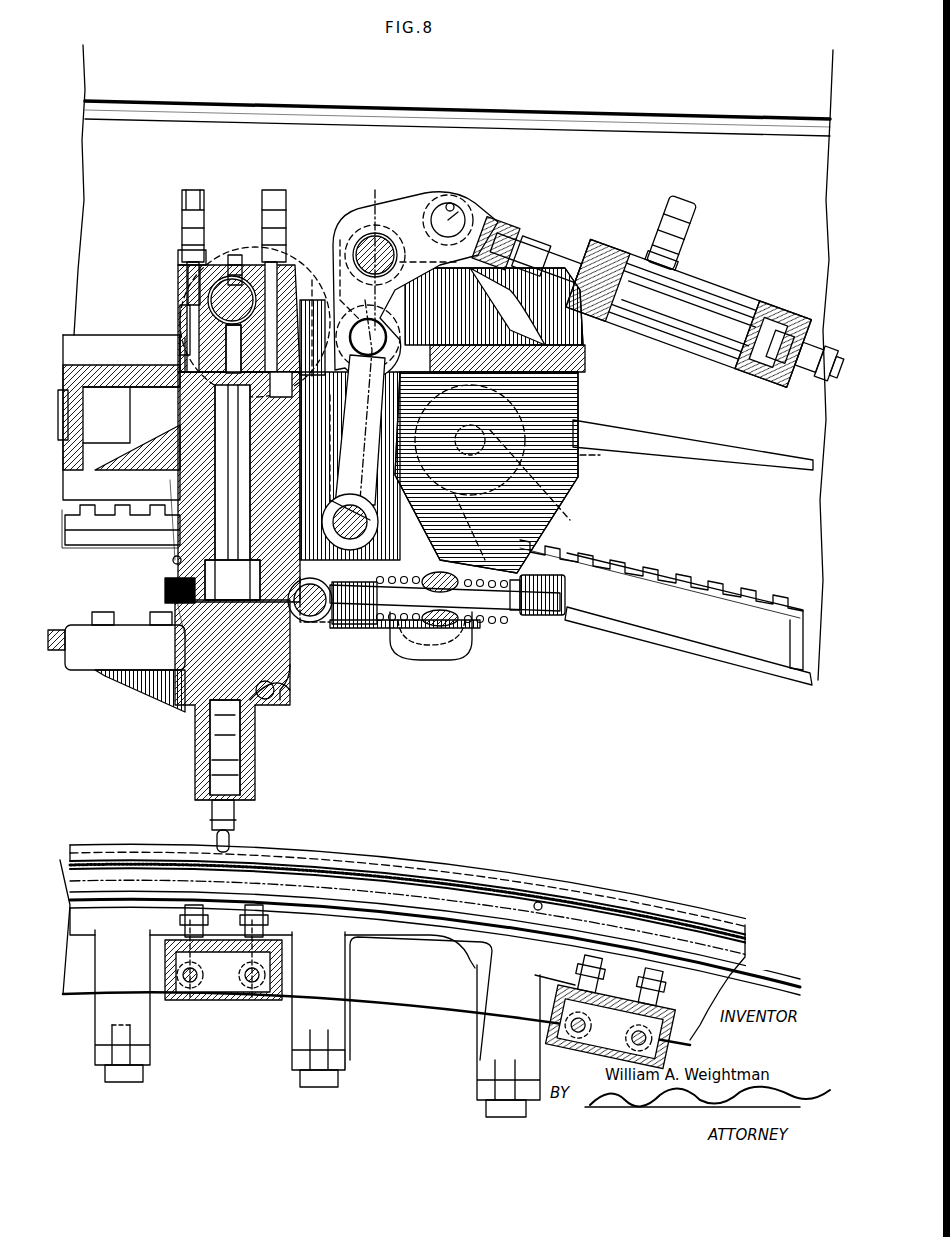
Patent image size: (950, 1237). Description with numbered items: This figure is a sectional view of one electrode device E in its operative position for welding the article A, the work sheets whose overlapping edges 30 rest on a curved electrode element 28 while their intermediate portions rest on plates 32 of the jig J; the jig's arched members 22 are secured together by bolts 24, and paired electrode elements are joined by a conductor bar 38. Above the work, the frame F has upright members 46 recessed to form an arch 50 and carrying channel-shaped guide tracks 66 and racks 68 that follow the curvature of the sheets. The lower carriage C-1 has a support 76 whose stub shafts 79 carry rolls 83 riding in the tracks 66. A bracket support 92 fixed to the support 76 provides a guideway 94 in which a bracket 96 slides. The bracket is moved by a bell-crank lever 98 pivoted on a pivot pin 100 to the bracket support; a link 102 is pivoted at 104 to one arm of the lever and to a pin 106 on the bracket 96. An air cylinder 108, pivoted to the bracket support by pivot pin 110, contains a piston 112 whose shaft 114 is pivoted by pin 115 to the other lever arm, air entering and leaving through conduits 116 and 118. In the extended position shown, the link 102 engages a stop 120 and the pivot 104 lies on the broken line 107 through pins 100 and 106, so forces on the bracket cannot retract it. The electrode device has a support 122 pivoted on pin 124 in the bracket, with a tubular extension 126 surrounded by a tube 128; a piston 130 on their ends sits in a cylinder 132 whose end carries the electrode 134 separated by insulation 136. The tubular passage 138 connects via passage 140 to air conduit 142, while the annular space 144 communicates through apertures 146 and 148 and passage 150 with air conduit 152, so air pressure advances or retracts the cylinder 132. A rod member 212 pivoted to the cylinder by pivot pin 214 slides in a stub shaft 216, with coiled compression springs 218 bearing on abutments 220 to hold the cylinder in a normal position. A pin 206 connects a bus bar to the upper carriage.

The frame F is at (142, 102).
The upright members 46 is at (780, 150).
The tube 128 is at (178, 372).
The aperture 148 is at (190, 372).
The cylinder 132 is at (140, 503).
The aperture 146 is at (170, 538).
The piston 130 is at (172, 560).
The pin 206 is at (62, 628).
The tubular passage 138 is at (176, 600).
The tubular extension 126 is at (165, 590).
The bracket 96 is at (283, 300).
The guideways 94 is at (316, 300).
The stop 120 is at (328, 372).
The air conduit 152 is at (182, 202).
The air conduit 142 is at (284, 200).
The passage 140 is at (250, 262).
The support 122 is at (178, 257).
The pin 124 is at (188, 282).
The passage 150 is at (182, 318).
The annular space 144 is at (239, 487).
The insulation 136 is at (256, 711).
The electrode device E is at (257, 782).
The electrode 134 is at (236, 835).
The bell-crank lever 98 is at (365, 222).
The pivot pin 100 is at (390, 245).
The broken line 107 is at (380, 200).
The pin 115 is at (453, 215).
The pivot 104 is at (372, 330).
The link 102 is at (357, 412).
The pin 106 is at (352, 505).
The bracket support 92 is at (570, 350).
The support 76 is at (578, 490).
The stub shafts 79 is at (571, 441).
The lower carriage C-1 is at (606, 453).
The rolls 83 is at (545, 515).
The air cylinder 108 is at (655, 268).
The shaft 114 is at (672, 280).
The piston 112 is at (730, 305).
The air conduit 118 is at (820, 385).
The air conduit 116 is at (660, 190).
The pivot pin 110 is at (578, 245).
The guide tracks 66 is at (760, 462).
The racks 68 is at (670, 575).
The arch 50 is at (762, 666).
The rod member 212 is at (400, 635).
The coiled compression springs 218 is at (405, 630).
The stub shaft 216 is at (444, 575).
The abutments 220 is at (440, 660).
The pivot pin 214 is at (300, 622).
The article A is at (432, 868).
The overlapping edges 30 is at (500, 882).
The electrode elements 28 is at (440, 893).
The plates 32 is at (536, 912).
The arched members 22 is at (452, 1015).
The jig J is at (290, 1025).
The conductor bar 38 is at (346, 1062).
The bolts 24 is at (250, 985).